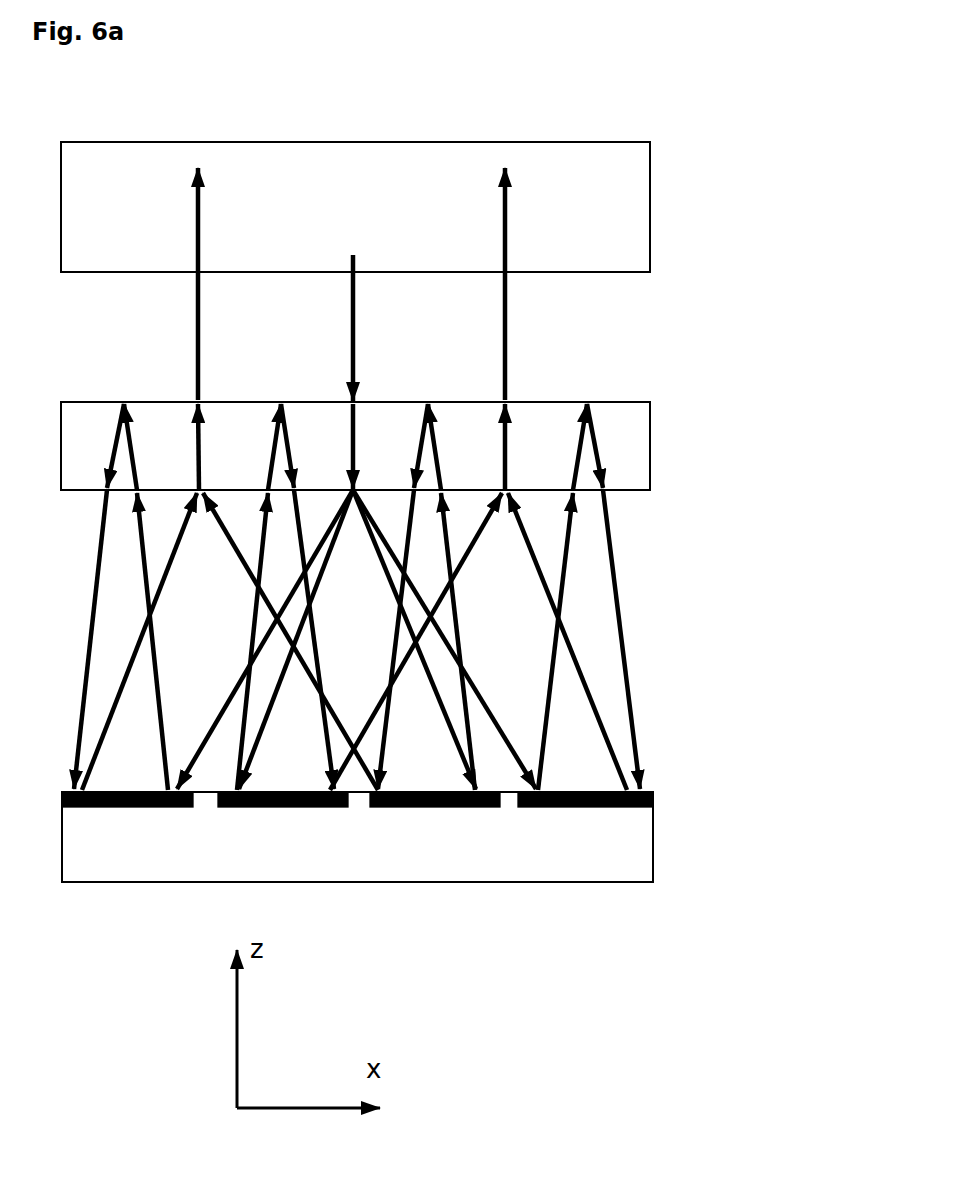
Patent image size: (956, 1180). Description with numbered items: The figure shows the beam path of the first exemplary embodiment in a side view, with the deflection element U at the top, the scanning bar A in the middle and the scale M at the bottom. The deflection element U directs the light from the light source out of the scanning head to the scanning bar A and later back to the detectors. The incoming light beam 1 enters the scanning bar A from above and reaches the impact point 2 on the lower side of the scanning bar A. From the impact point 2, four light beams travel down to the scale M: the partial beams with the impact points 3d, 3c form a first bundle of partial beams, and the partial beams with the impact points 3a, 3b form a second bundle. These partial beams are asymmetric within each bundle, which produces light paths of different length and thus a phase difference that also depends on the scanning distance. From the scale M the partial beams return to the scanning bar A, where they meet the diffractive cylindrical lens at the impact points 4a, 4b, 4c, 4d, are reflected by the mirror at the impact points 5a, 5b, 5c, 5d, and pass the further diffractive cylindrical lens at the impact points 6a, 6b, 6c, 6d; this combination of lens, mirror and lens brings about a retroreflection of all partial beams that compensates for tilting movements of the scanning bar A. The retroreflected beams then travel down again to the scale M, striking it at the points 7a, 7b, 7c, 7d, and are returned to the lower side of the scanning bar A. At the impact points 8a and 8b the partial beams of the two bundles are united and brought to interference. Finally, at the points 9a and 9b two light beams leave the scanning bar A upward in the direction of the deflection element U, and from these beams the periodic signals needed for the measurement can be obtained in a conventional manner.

The incident light beam 1 is at (374, 328).
The impact point 2 is at (356, 596).
The impact point 3a is at (170, 816).
The impact point 3b is at (474, 816).
The impact point 3c is at (240, 816).
The impact point 3d is at (544, 816).
The impact point 4a is at (160, 623).
The impact point 4b is at (465, 623).
The impact point 4c is at (245, 623).
The impact point 4d is at (549, 623).
The impact point 5a is at (121, 428).
The impact point 5b is at (427, 428).
The impact point 5c is at (279, 428).
The impact point 5d is at (589, 428).
The impact point 6a is at (82, 639).
The impact point 6b is at (395, 639).
The impact point 6c is at (314, 639).
The impact point 6d is at (629, 639).
The first target spot on mask 7a is at (86, 816).
The second target spot on mask 7b is at (389, 816).
The third target spot on mask 7c is at (326, 816).
The fourth target spot on mask 7d is at (629, 816).
The impact point 8a is at (230, 641).
The impact point 8b is at (478, 641).
The point 9a is at (223, 329).
The point 9b is at (481, 329).
The deflection element U is at (632, 224).
The scanning bar A is at (630, 460).
The scale M is at (635, 858).